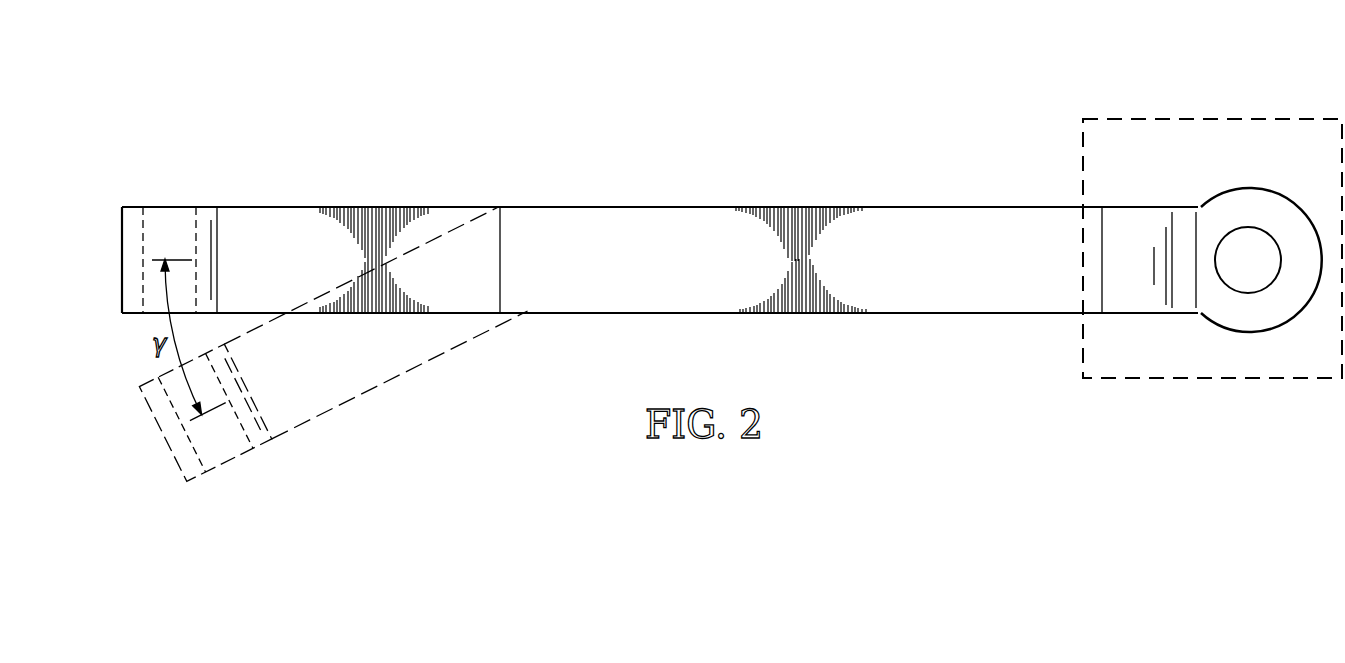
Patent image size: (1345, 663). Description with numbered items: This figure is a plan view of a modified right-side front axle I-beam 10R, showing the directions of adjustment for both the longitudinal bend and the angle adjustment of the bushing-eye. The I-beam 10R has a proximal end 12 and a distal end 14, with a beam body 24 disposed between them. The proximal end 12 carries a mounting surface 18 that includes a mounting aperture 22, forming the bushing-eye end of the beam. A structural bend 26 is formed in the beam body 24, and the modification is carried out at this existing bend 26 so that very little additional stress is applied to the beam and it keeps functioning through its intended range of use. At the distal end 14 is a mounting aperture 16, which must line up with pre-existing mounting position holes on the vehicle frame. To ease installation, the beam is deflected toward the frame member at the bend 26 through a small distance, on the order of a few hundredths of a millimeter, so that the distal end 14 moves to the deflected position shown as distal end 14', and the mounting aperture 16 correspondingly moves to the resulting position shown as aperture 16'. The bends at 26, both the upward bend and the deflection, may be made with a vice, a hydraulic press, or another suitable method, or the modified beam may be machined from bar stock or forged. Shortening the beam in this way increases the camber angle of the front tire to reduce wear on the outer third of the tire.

The I-beam 10R is at (360, 132).
The proximal end 12 is at (1258, 112).
The distal end 14 is at (136, 260).
The distal end 14' is at (323, 344).
The mounting aperture 16 is at (162, 223).
The mounting aperture 16' is at (205, 448).
The mounting surface 18 is at (1269, 190).
The mounting aperture 22 is at (1222, 239).
The beam body 24 is at (590, 216).
The structural bend 26 is at (500, 206).